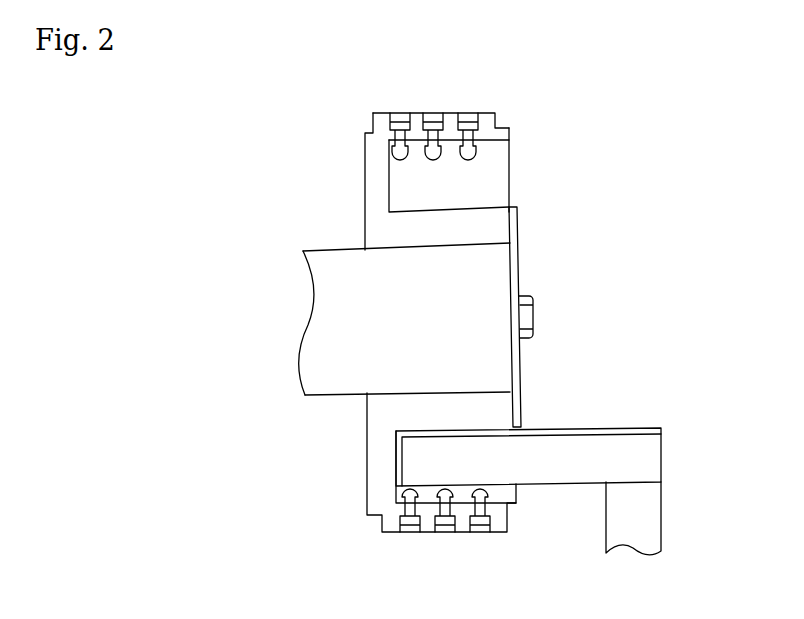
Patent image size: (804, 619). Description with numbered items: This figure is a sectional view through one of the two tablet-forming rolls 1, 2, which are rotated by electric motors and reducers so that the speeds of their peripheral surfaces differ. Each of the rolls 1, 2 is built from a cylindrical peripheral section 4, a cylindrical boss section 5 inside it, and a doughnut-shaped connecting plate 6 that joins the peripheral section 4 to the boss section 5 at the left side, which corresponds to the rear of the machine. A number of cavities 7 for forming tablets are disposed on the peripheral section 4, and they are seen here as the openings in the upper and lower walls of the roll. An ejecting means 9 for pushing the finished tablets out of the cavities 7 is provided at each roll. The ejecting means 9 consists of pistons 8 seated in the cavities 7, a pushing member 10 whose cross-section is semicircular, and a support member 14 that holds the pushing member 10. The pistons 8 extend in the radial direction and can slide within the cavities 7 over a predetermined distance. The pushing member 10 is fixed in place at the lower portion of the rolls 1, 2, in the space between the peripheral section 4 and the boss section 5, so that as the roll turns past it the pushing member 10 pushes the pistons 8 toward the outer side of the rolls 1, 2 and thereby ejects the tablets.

The roll 1 is at (422, 60).
The roll 2 is at (404, 204).
The peripheral section 4 is at (490, 122).
The boss section 5 is at (478, 225).
The connecting plate 6 is at (376, 189).
The cavities 7 is at (410, 532).
The pistons 8 is at (443, 513).
The ejecting means 9 is at (606, 394).
The pushing member 10 is at (563, 472).
The support member 14 is at (633, 542).